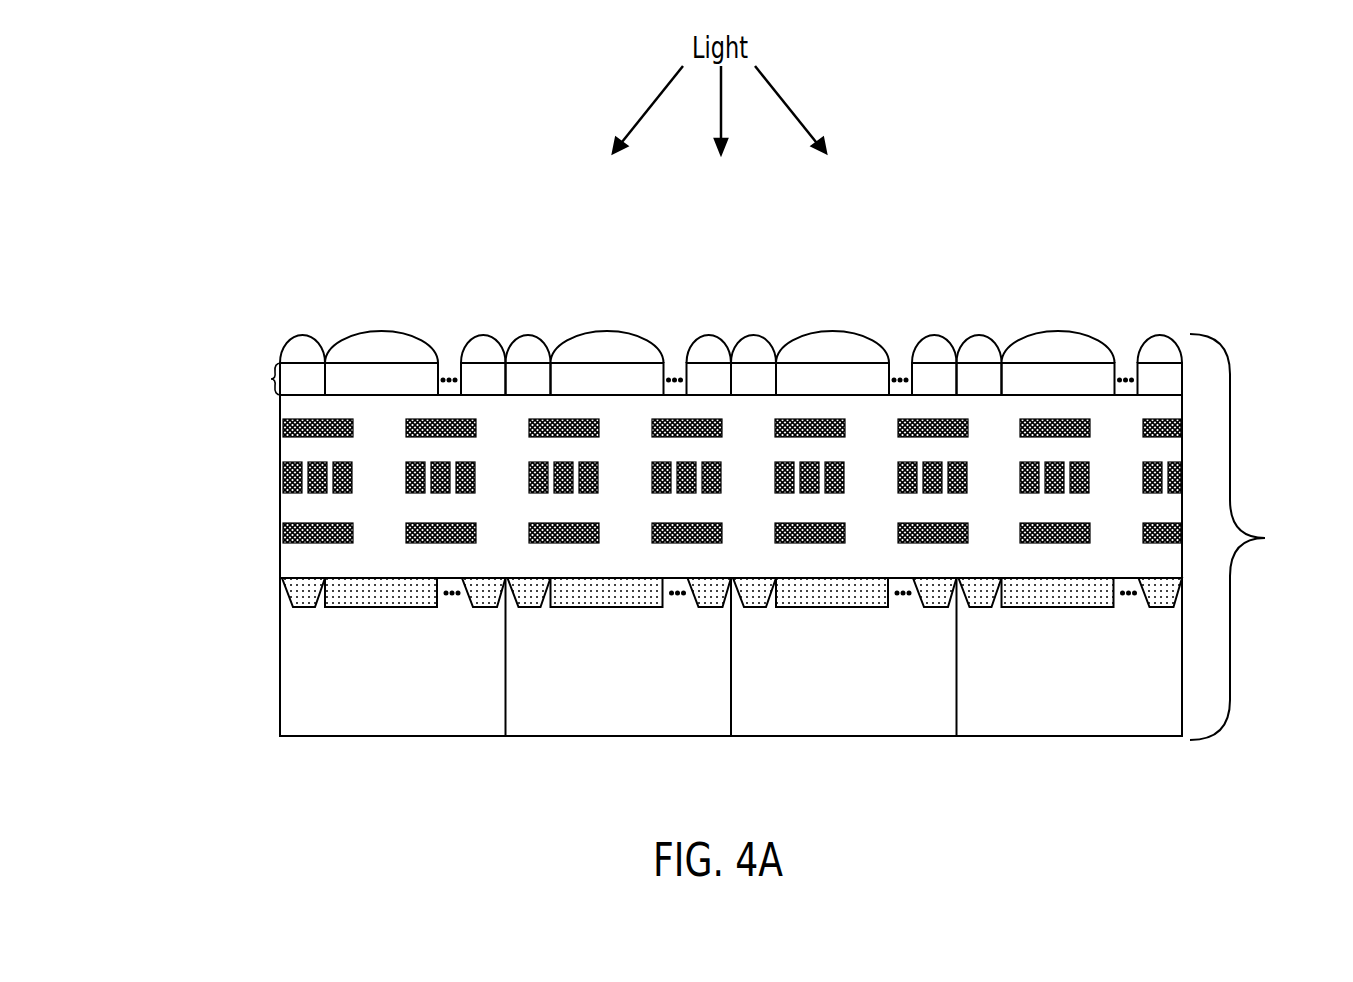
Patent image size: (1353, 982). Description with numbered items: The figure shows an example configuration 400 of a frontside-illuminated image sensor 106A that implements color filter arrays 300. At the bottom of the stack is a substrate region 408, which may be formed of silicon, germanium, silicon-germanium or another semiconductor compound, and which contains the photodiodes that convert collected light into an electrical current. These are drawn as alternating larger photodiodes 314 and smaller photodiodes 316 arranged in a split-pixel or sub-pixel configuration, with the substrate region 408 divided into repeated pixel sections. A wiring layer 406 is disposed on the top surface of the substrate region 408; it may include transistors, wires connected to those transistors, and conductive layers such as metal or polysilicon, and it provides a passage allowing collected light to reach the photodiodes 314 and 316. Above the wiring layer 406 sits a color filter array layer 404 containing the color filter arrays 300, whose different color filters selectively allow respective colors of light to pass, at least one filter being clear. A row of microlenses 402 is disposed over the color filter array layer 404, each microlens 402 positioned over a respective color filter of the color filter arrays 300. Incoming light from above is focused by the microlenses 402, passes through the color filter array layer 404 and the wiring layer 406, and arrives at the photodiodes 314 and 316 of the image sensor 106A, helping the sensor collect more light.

The example configuration 400 is at (204, 159).
The microlens 402 is at (302, 335).
The color filter array layer 404 is at (276, 379).
The wiring layer 406 is at (283, 477).
The color filter array 300 is at (284, 392).
The larger photodiode 314 is at (374, 608).
The smaller photodiode 316 is at (302, 608).
The substrate region 408 is at (372, 726).
The frontside-illuminated image sensor 106A is at (1259, 537).